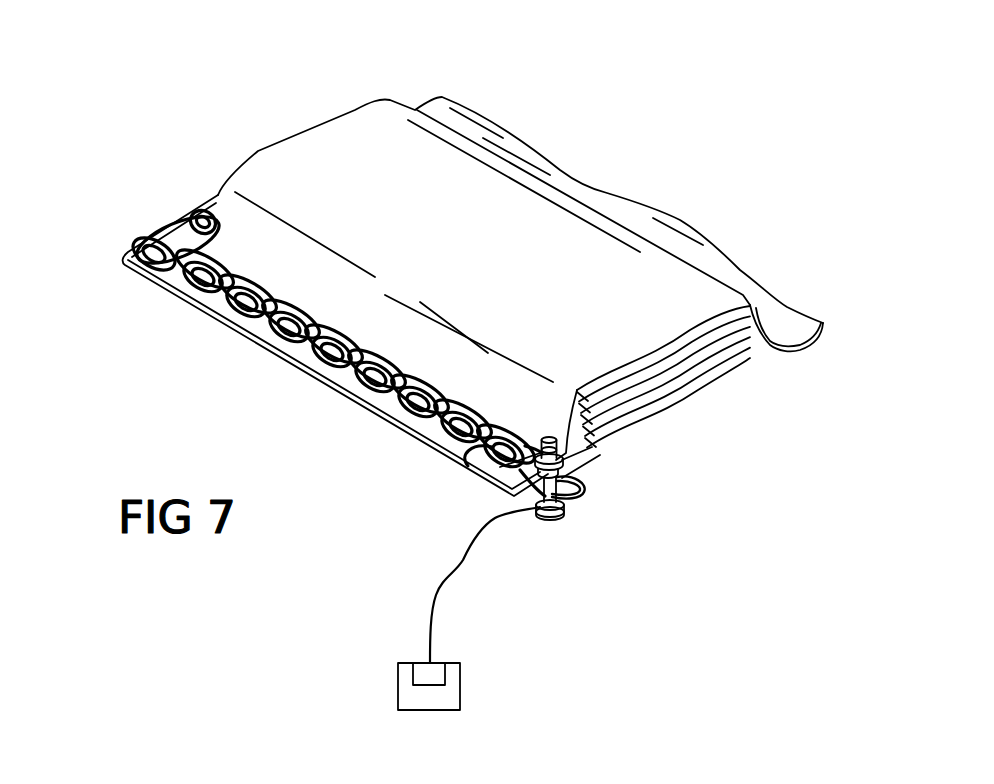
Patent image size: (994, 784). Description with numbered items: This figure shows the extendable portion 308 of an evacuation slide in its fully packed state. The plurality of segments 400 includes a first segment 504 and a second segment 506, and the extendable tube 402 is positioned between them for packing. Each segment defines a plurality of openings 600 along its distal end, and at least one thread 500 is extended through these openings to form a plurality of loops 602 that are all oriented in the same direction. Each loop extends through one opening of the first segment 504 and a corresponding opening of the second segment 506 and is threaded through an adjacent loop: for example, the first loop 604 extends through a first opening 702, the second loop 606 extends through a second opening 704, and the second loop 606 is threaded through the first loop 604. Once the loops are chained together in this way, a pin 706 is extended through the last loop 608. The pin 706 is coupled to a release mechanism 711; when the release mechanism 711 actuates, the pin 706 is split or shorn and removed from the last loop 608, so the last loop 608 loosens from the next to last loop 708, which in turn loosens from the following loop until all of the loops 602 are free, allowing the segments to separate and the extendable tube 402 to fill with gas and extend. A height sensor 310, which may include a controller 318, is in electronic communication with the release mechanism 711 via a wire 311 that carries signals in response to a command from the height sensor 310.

The extendable portion 308 is at (143, 108).
The plurality of segments 400 is at (121, 248).
The thread 500 is at (180, 222).
The first segment 504 is at (282, 162).
The second segment 506 is at (772, 350).
The extendable tube 402 is at (763, 353).
The plurality of openings 600 is at (133, 270).
The plurality of loops 602 is at (172, 272).
The first opening 702 is at (222, 296).
The first loop 604 is at (232, 312).
The second opening 704 is at (283, 344).
The second loop 606 is at (330, 347).
The next to last loop 708 is at (463, 463).
The pin 706 is at (547, 432).
The release mechanism 711 is at (566, 518).
The last loop 608 is at (530, 500).
The wire 311 is at (430, 625).
The controller 318 is at (433, 677).
The height sensor 310 is at (460, 683).